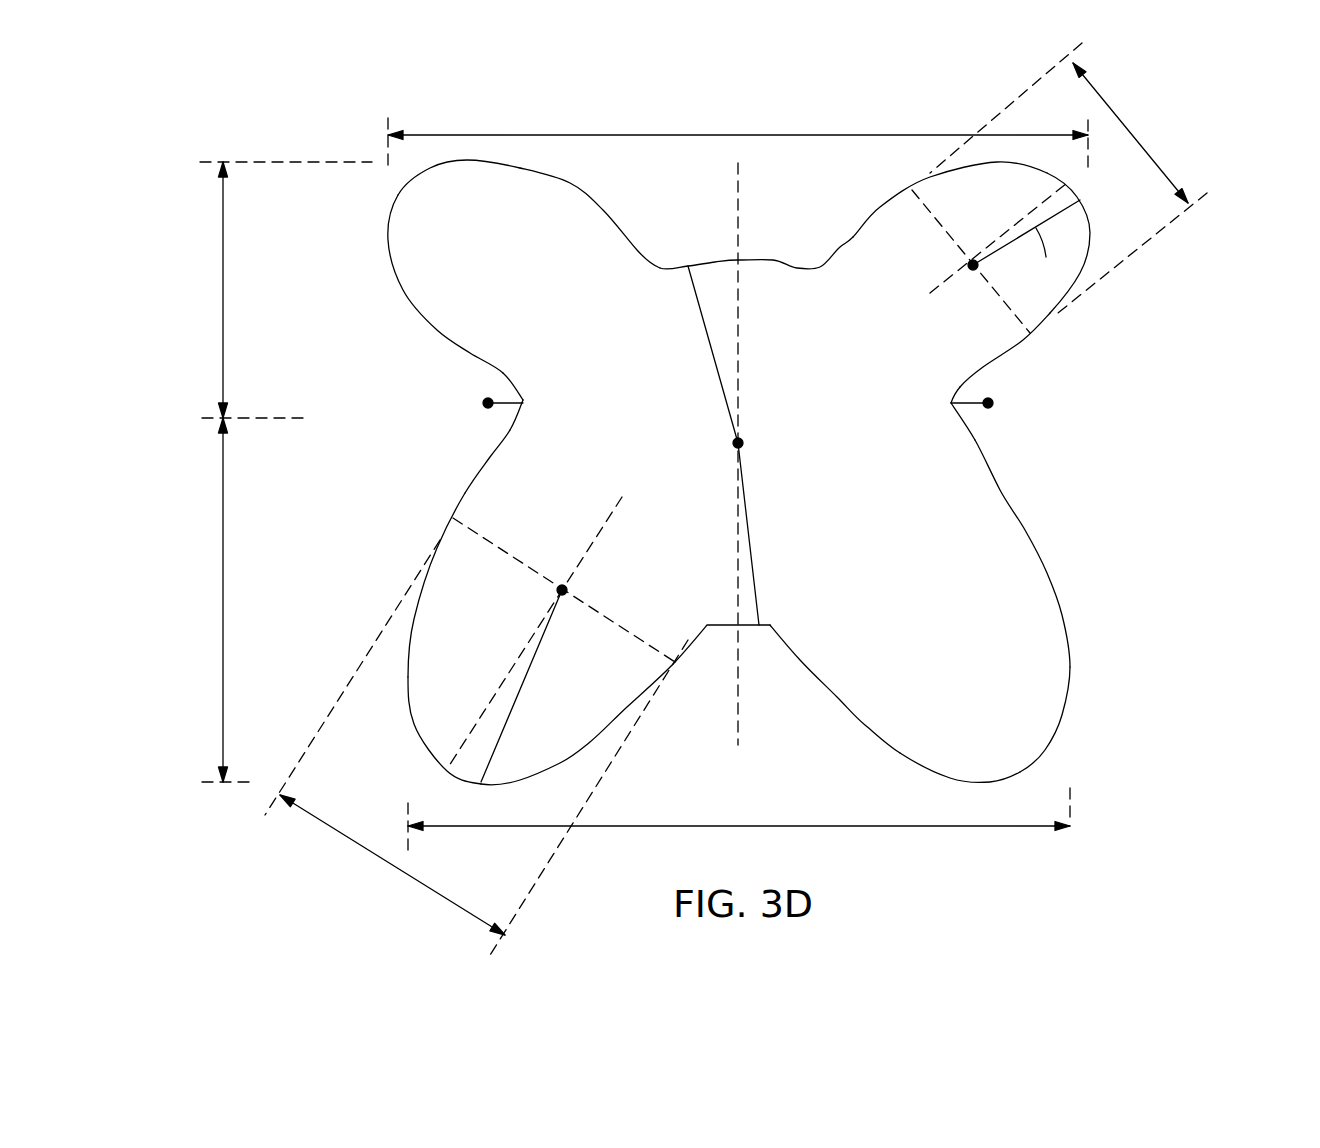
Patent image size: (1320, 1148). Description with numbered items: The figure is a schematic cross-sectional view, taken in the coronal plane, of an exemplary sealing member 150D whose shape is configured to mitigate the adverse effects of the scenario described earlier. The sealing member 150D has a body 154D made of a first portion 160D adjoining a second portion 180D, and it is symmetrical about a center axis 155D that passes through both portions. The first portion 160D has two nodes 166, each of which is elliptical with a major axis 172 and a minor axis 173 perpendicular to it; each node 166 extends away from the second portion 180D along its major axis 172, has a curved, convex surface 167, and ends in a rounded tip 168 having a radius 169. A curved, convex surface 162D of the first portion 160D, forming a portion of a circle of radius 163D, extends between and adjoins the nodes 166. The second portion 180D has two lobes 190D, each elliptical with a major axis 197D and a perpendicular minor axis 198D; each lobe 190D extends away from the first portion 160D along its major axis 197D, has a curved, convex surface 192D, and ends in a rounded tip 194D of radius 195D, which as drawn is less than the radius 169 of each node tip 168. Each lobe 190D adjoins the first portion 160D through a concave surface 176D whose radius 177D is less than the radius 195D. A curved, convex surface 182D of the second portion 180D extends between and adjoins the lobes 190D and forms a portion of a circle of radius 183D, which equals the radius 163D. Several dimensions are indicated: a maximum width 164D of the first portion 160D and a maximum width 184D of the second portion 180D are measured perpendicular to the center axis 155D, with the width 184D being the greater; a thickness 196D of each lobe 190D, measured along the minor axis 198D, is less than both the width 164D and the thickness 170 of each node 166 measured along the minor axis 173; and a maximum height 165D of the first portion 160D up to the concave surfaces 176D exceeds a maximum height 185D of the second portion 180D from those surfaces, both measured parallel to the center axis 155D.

The sealing member 150D is at (771, 501).
The body 154D is at (1040, 602).
The center axis 155D is at (740, 175).
The first portion 160D is at (733, 695).
The convex surface 162D is at (747, 630).
The radius 163D is at (757, 572).
The maximum width 164D is at (905, 828).
The maximum height 165D is at (223, 605).
The node 166 is at (922, 663).
The convex surface 167 is at (1072, 690).
The tip 168 is at (1025, 775).
The radius 169 is at (508, 724).
The thickness 170 is at (345, 836).
The major axis 172 is at (597, 537).
The minor axis 173 is at (628, 630).
The concave surface 176D is at (530, 410).
The radius 177D is at (500, 408).
The second portion 180D is at (787, 243).
The convex surface 182D is at (724, 265).
The radius 183D is at (712, 350).
The maximum width 184D is at (648, 130).
The maximum height 185D is at (223, 290).
The lobe 190D is at (450, 308).
The convex surface 192D is at (557, 185).
The tip 194D is at (403, 183).
The radius 195D is at (1026, 242).
The thickness 196D is at (1162, 152).
The major axis 197D is at (947, 286).
The minor axis 198D is at (1000, 297).